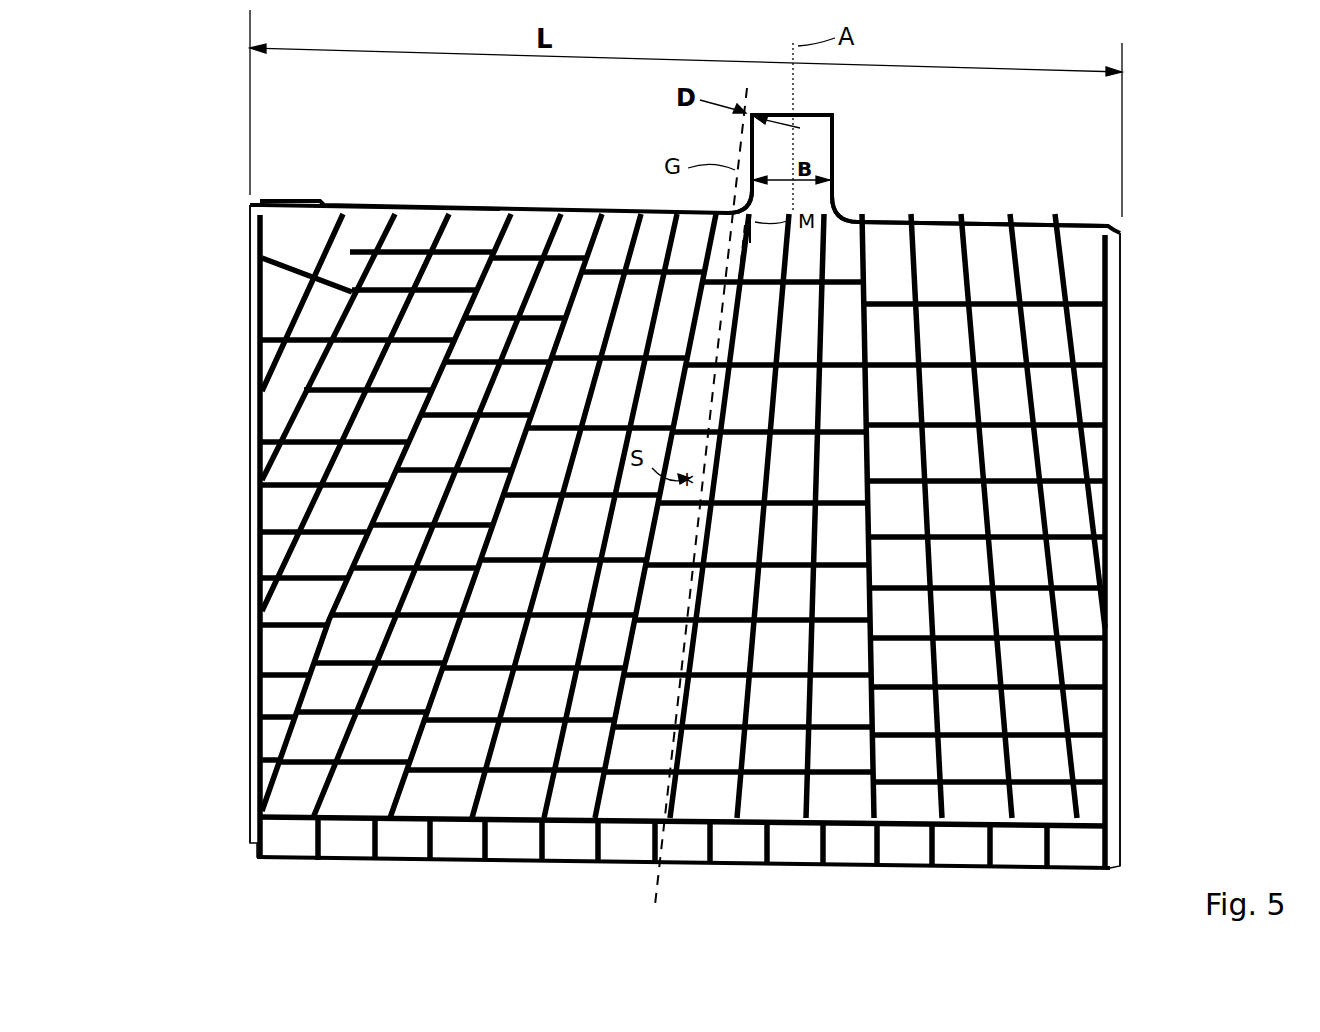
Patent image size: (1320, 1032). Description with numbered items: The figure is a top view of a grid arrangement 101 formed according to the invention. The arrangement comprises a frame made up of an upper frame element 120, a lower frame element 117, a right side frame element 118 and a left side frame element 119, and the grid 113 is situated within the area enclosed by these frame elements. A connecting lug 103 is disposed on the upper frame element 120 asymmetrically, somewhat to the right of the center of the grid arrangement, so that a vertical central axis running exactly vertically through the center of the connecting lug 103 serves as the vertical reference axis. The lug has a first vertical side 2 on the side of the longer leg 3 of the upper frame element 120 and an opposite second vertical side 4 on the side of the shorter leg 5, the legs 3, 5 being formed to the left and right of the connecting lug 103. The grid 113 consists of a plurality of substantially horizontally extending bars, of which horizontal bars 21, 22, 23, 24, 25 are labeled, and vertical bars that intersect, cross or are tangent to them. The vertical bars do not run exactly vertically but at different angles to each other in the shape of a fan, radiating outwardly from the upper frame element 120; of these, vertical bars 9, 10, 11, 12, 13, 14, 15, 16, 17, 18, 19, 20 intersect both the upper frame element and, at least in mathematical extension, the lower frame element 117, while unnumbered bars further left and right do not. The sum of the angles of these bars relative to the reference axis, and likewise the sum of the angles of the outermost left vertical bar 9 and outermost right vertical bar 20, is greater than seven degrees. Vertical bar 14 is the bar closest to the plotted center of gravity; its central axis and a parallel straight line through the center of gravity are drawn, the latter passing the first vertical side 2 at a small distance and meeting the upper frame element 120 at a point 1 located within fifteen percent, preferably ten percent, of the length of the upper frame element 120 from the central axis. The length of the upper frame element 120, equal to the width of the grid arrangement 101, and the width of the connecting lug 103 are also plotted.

The point 1 is at (728, 210).
The first vertical side 2 is at (742, 128).
The longer leg 3 is at (420, 205).
The second vertical side 4 is at (838, 143).
The shorter leg 5 is at (1022, 222).
The vertical bar 9 is at (505, 347).
The vertical bar 10 is at (558, 343).
The vertical bar 11 is at (597, 352).
The vertical bar 12 is at (642, 352).
The vertical bar 13 is at (690, 353).
The vertical bar 14 is at (742, 352).
The vertical bar 15 is at (802, 352).
The vertical bar 16 is at (830, 352).
The vertical bar 17 is at (872, 356).
The vertical bar 18 is at (930, 361).
The vertical bar 19 is at (985, 353).
The vertical bar 20 is at (1038, 354).
The horizontal bar 21 is at (428, 572).
The horizontal bar 22 is at (488, 607).
The horizontal bar 23 is at (548, 607).
The horizontal bar 24 is at (608, 611).
The horizontal bar 25 is at (722, 612).
The grid arrangement 101 is at (1202, 454).
The connecting lug 103 is at (822, 115).
The grid 113 is at (385, 462).
The lower frame element 117 is at (805, 870).
The right side frame element 118 is at (1118, 686).
The left side frame element 119 is at (248, 568).
The upper frame element 120 is at (598, 213).